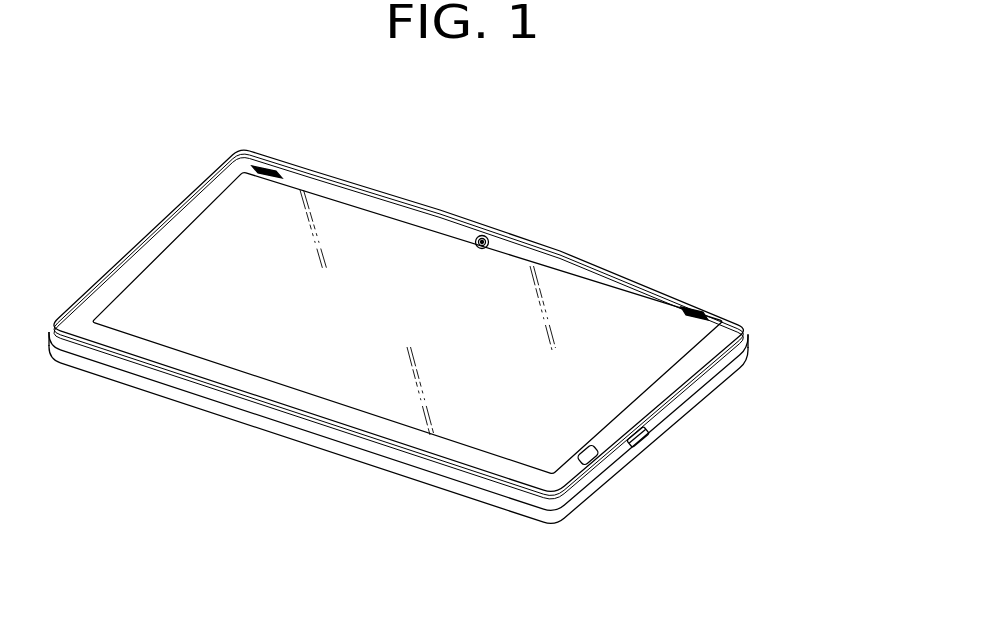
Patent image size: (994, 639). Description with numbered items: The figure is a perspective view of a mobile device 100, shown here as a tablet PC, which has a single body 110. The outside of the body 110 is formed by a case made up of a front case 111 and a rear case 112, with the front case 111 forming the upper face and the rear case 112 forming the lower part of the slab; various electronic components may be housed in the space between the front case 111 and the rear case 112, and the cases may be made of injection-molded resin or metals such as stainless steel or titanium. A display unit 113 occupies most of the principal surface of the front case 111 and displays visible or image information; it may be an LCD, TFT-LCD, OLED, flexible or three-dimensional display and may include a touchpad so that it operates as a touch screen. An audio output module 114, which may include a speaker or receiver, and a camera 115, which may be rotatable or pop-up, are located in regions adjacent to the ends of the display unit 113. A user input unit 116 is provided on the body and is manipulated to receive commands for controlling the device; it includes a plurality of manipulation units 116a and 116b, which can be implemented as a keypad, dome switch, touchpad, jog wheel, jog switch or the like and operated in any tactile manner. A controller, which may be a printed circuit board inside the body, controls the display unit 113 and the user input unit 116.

The mobile device 100 is at (143, 186).
The body 110 is at (838, 288).
The front case 111 is at (746, 326).
The rear case 112 is at (744, 352).
The display unit 113 is at (647, 323).
The audio output module 114 is at (276, 169).
The camera 115 is at (483, 236).
The user input unit 116 is at (784, 448).
The manipulation unit 116a is at (608, 458).
The manipulation unit 116b is at (648, 440).